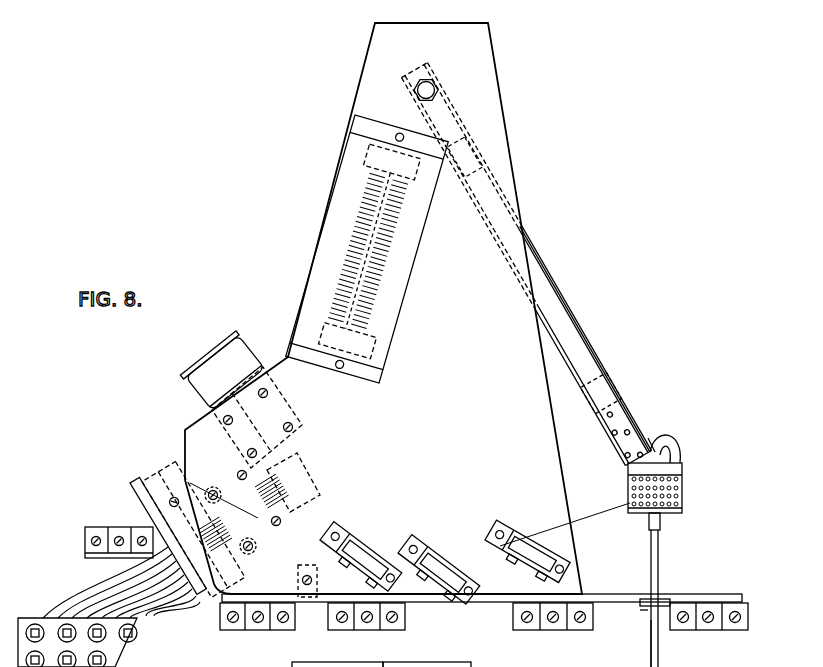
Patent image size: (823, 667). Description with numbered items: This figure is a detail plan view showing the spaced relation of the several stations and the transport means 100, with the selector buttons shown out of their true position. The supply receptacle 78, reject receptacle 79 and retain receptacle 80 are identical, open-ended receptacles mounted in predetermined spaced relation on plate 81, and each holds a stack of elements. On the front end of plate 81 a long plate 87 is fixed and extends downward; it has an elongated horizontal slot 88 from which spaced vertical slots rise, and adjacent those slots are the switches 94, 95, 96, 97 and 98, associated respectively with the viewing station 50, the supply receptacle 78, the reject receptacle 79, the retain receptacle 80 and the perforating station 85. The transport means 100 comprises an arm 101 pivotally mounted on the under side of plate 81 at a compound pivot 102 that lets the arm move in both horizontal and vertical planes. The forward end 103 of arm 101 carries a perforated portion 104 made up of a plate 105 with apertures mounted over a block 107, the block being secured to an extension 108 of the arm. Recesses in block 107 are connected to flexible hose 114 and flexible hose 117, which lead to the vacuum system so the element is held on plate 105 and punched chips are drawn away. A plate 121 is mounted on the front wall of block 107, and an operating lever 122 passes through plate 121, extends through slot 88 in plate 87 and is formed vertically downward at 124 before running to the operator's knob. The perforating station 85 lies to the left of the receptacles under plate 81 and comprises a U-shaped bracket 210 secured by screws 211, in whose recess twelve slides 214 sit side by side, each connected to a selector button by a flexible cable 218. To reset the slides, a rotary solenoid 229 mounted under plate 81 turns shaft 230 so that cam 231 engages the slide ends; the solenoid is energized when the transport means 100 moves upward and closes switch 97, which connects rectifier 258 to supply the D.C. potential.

The viewing station 50 is at (664, 490).
The supply receptacle 78 is at (523, 540).
The reject receptacle 79 is at (440, 545).
The retain receptacle 80 is at (358, 545).
The plate 81 is at (553, 430).
The perforating station 85 is at (263, 556).
The long plate 87 is at (688, 600).
The elongated horizontal slot 88 is at (659, 597).
The switch 94 is at (732, 627).
The switch 95 is at (577, 627).
The switch 96 is at (400, 623).
The switch 97 is at (277, 625).
The switch 98 is at (104, 511).
The transport means 100 is at (537, 264).
The arm 101 is at (600, 357).
The pivotal mount 102 is at (432, 89).
The forward end 103 is at (645, 426).
The perforated portion 104 is at (683, 512).
The plate 105 is at (631, 497).
The block 107 is at (670, 470).
The extension 108 is at (614, 408).
The flexible hose 114 is at (660, 449).
The flexible hose 117 is at (690, 433).
The plate 121 is at (630, 512).
The operating lever 122 is at (647, 569).
The vertically downward portion 124 is at (659, 645).
The U-shaped bracket 210 is at (268, 537).
The screws 211 is at (190, 483).
The slides 214 is at (283, 516).
The flexible cable 218 is at (87, 595).
The rotary solenoid 229 is at (195, 387).
The shaft 230 is at (285, 410).
The cam 231 is at (308, 468).
The rectifier 258 is at (353, 214).